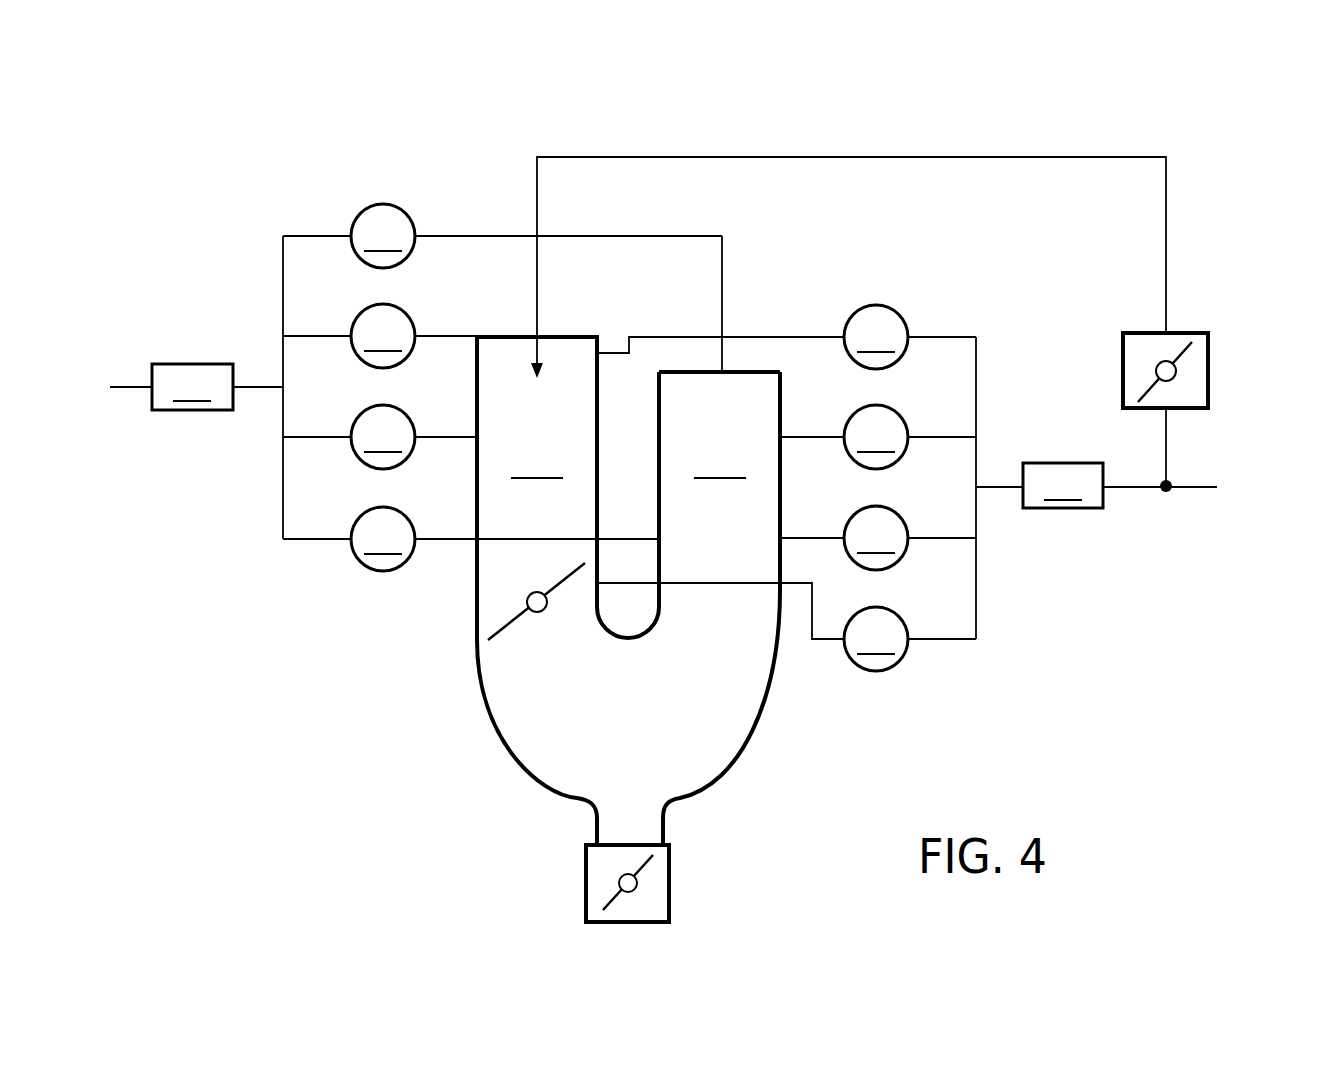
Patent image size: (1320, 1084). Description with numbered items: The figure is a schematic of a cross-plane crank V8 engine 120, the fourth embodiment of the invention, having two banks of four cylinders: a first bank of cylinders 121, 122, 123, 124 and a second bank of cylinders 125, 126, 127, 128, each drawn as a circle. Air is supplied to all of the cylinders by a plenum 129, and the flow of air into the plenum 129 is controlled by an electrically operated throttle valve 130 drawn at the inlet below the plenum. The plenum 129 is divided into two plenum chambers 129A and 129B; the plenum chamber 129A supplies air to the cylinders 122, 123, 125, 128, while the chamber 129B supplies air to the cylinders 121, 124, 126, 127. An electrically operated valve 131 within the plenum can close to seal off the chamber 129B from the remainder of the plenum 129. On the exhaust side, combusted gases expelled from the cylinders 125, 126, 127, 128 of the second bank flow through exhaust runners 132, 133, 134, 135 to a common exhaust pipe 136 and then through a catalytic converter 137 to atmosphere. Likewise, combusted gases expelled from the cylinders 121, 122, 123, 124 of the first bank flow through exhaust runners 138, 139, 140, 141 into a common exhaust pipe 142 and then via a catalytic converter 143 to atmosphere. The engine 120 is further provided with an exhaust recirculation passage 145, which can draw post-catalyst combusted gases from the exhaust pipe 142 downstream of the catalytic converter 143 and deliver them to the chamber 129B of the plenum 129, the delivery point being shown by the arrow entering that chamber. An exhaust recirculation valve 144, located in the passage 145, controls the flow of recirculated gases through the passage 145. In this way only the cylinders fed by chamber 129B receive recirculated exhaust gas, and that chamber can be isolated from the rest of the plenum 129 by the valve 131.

The cross-plane crank V8 engine 120 is at (872, 113).
The cylinder 121 is at (876, 337).
The cylinder 122 is at (876, 437).
The cylinder 123 is at (876, 538).
The cylinder 124 is at (876, 639).
The cylinder 125 is at (383, 236).
The cylinder 126 is at (383, 336).
The cylinder 127 is at (383, 437).
The cylinder 128 is at (383, 539).
The plenum 129 is at (588, 591).
The plenum chamber 129A is at (719, 425).
The plenum chamber 129B is at (568, 487).
The electrically operated throttle valve 130 is at (669, 922).
The electrically operated valve 131 is at (538, 613).
The exhaust runner 132 is at (303, 236).
The exhaust runner 133 is at (303, 336).
The exhaust runner 134 is at (303, 437).
The exhaust runner 135 is at (303, 539).
The common exhaust pipe 136 is at (262, 387).
The catalytic converter 137 is at (171, 387).
The exhaust runner 138 is at (958, 337).
The exhaust runner 139 is at (958, 437).
The exhaust runner 140 is at (958, 538).
The exhaust runner 141 is at (958, 639).
The common exhaust pipe 142 is at (1000, 487).
The catalytic converter 143 is at (1120, 485).
The exhaust recirculation valve 144 is at (1208, 333).
The exhaust recirculation passage 145 is at (1040, 157).